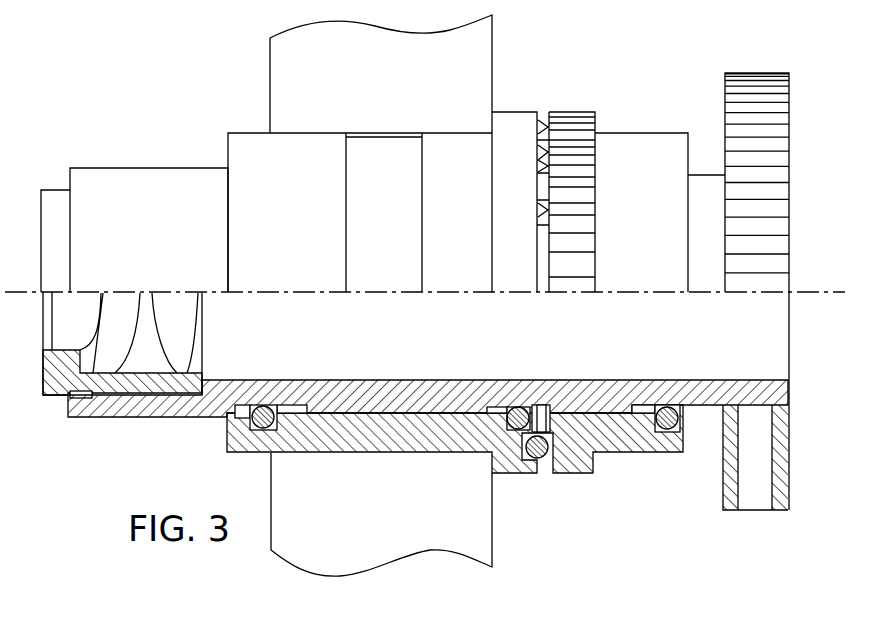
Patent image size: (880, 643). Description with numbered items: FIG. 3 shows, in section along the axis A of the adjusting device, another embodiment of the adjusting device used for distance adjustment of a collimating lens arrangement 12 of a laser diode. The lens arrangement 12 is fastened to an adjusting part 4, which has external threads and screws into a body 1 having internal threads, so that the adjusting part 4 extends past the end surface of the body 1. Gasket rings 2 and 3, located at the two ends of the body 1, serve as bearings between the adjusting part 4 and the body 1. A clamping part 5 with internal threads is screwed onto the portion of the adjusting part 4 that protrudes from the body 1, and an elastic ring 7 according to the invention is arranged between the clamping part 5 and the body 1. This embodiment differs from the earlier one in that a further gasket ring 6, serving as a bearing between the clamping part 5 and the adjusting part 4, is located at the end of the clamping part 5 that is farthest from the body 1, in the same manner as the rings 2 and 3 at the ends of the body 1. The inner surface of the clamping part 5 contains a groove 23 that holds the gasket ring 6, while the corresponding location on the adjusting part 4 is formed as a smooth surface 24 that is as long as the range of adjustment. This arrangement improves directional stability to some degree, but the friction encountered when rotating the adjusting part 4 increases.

The body 1 is at (250, 133).
The gasket ring 2 is at (258, 404).
The gasket ring 3 is at (516, 406).
The adjusting part 4 is at (126, 168).
The clamping part 5 is at (640, 133).
The gasket ring 6 is at (668, 405).
The elastic ring 7 is at (529, 436).
The collimating lens arrangement 12 is at (58, 190).
The groove 23 is at (662, 432).
The smooth surface 24 is at (642, 404).
The axis A is at (811, 292).